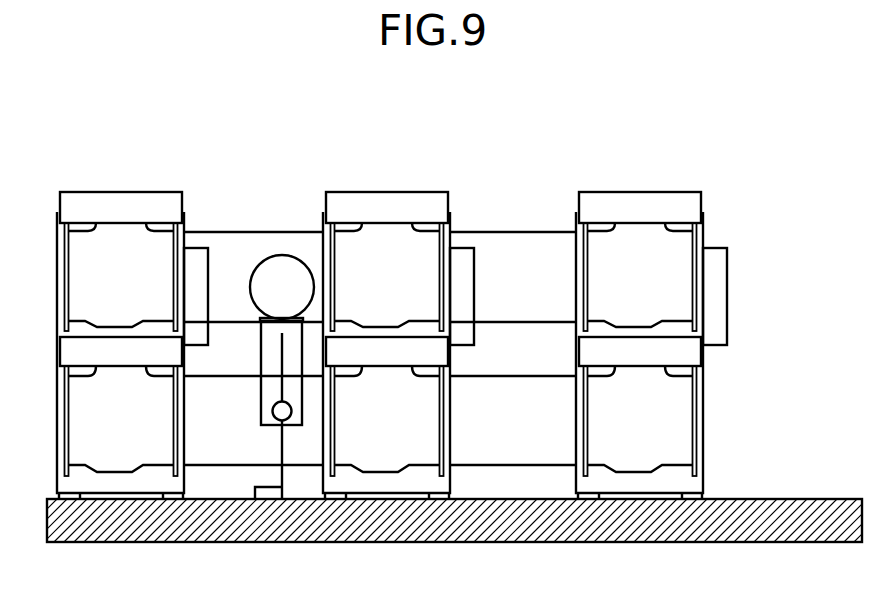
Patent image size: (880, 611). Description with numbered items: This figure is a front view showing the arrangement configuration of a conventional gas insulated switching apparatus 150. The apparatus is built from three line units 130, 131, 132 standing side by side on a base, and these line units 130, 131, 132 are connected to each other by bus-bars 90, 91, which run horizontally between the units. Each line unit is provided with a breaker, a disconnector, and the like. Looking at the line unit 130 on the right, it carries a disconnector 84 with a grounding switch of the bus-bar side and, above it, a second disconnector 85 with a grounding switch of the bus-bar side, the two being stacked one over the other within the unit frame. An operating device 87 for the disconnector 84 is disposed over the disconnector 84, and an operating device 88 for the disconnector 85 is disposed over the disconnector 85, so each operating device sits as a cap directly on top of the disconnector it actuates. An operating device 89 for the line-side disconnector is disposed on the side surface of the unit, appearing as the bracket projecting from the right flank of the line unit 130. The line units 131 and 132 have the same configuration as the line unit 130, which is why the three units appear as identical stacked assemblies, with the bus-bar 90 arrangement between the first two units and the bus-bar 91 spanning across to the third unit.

The conventional gas insulated switching apparatus 150 is at (496, 152).
The bus-bar 91 is at (517, 250).
The operating device 88 is at (695, 203).
The disconnector 85 is at (675, 274).
The operating device 89 is at (717, 307).
The operating device 87 is at (693, 358).
The disconnector 84 is at (677, 420).
The bus-bar 90 is at (223, 450).
The line unit 132 is at (120, 477).
The line unit 131 is at (386, 477).
The line unit 130 is at (675, 391).